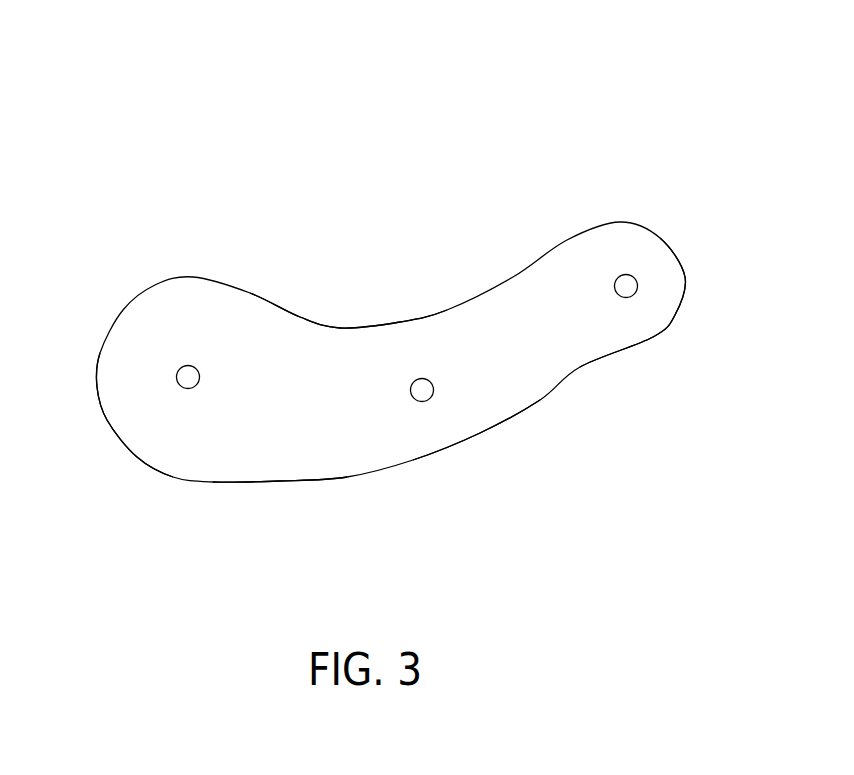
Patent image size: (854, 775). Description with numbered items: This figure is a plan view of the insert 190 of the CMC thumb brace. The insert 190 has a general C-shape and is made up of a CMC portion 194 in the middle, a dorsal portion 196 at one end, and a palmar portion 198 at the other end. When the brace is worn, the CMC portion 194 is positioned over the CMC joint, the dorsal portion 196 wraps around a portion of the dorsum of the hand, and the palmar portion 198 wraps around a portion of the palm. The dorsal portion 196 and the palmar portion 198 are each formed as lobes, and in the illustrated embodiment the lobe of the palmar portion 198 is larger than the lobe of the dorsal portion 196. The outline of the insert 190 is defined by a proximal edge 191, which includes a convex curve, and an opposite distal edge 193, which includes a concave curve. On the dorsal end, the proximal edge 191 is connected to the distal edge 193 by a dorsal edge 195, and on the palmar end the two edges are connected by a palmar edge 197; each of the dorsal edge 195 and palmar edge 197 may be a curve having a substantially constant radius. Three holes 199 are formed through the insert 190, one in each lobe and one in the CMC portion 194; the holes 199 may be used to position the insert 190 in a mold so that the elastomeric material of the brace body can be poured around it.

The insert 190 is at (686, 126).
The proximal edge 191 is at (297, 482).
The distal edge 193 is at (340, 327).
The CMC portion 194 is at (443, 423).
The dorsal edge 195 is at (685, 272).
The dorsal portion 196 is at (648, 315).
The palmar edge 197 is at (97, 388).
The palmar portion 198 is at (155, 428).
The holes 199 is at (189, 365).